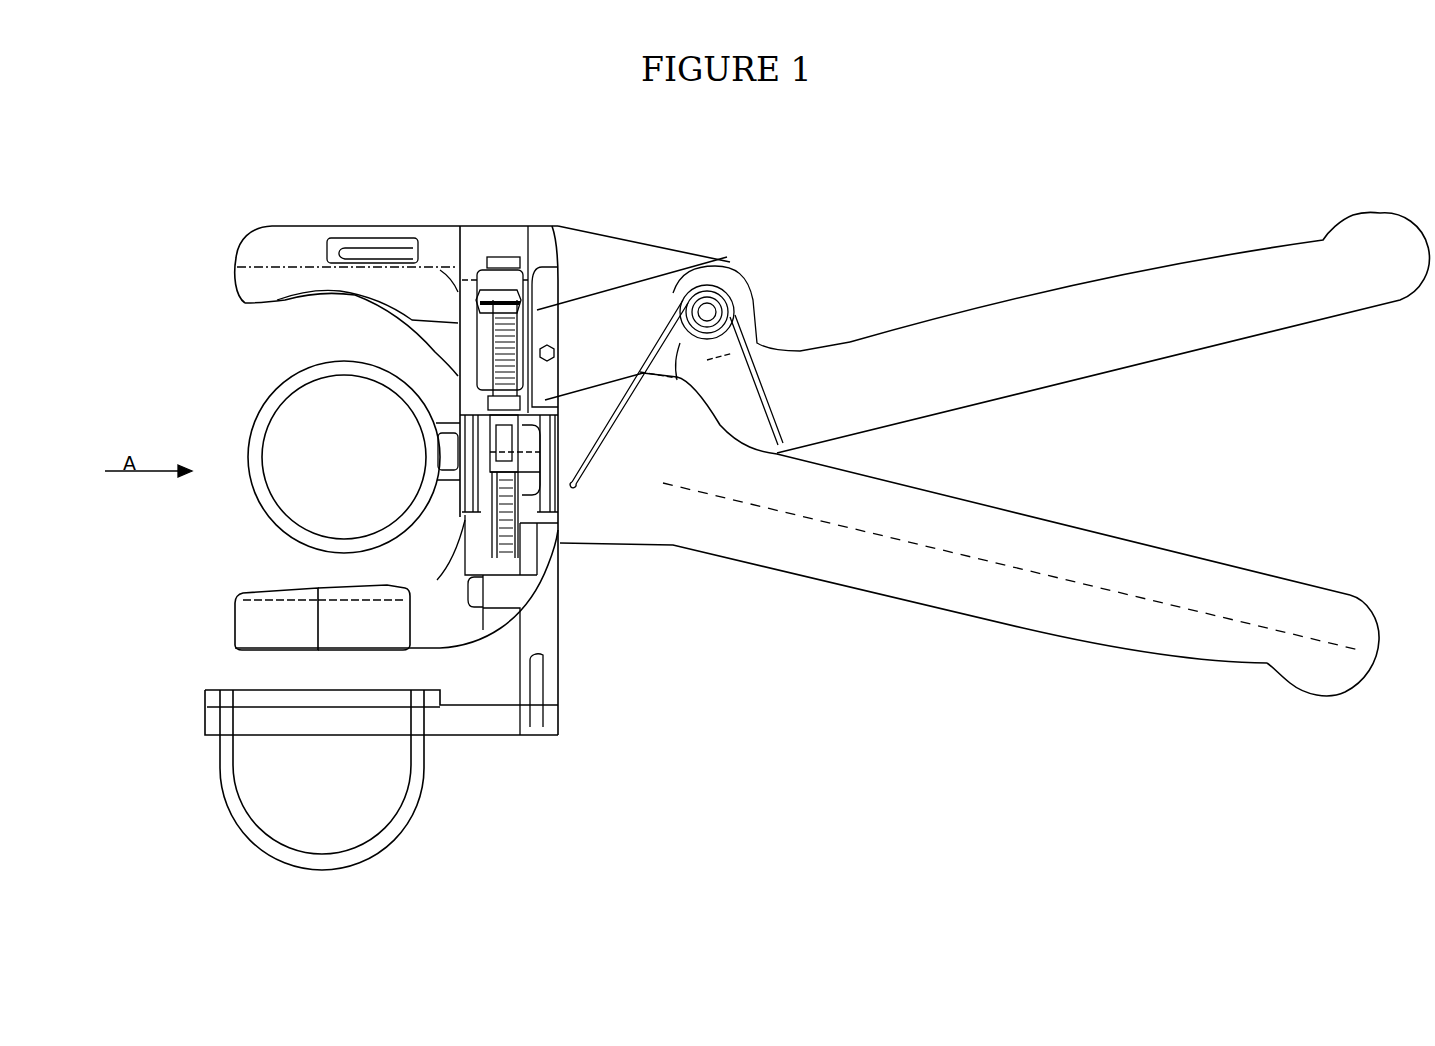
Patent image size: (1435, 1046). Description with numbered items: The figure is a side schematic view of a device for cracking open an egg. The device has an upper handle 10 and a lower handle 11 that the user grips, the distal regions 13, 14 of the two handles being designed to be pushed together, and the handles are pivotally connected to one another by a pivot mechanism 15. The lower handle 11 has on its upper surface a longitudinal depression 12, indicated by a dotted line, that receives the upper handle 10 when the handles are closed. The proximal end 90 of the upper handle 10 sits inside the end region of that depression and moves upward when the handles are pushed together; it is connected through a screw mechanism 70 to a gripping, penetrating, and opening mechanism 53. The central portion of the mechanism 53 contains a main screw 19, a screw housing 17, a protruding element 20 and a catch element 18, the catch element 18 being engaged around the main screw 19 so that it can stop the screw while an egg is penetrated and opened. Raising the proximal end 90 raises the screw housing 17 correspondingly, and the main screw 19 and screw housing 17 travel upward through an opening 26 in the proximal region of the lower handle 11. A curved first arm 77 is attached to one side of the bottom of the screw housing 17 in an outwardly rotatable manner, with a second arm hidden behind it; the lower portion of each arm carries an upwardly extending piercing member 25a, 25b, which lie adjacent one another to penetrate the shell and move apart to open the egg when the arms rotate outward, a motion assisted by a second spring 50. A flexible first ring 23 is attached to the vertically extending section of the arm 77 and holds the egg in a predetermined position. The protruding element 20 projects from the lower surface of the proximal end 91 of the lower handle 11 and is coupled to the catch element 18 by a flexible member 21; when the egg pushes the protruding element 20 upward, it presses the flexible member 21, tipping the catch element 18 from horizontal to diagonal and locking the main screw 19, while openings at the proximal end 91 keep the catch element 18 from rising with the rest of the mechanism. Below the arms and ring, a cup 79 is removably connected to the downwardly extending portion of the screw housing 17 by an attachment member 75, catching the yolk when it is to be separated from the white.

The upper handle 10 is at (1100, 278).
The lower handle 11 is at (1010, 627).
The longitudinal depression 12 is at (1170, 605).
The distal region of the upper handle 13 is at (1306, 188).
The distal region of the lower handle 14 is at (1218, 735).
The pivot mechanism 15 is at (723, 290).
The screw housing 17 is at (553, 228).
The catch element 18 is at (477, 303).
The main screw 19 is at (462, 344).
The protruding element 20 is at (308, 304).
The flexible member 21 is at (360, 237).
The first ring 23 is at (250, 427).
The first piercing member 25a is at (270, 588).
The second piercing member 25b is at (374, 585).
The opening 26 is at (481, 243).
The second spring 50 is at (530, 520).
The gripping, penetrating, and opening mechanism 53 is at (573, 570).
The screw mechanism 70 is at (555, 347).
The attachment member 75 is at (428, 757).
The first arm 77 is at (455, 650).
The cup 79 is at (393, 793).
The proximal end of the upper handle 90 is at (633, 275).
The proximal end of the lower handle 91 is at (268, 229).